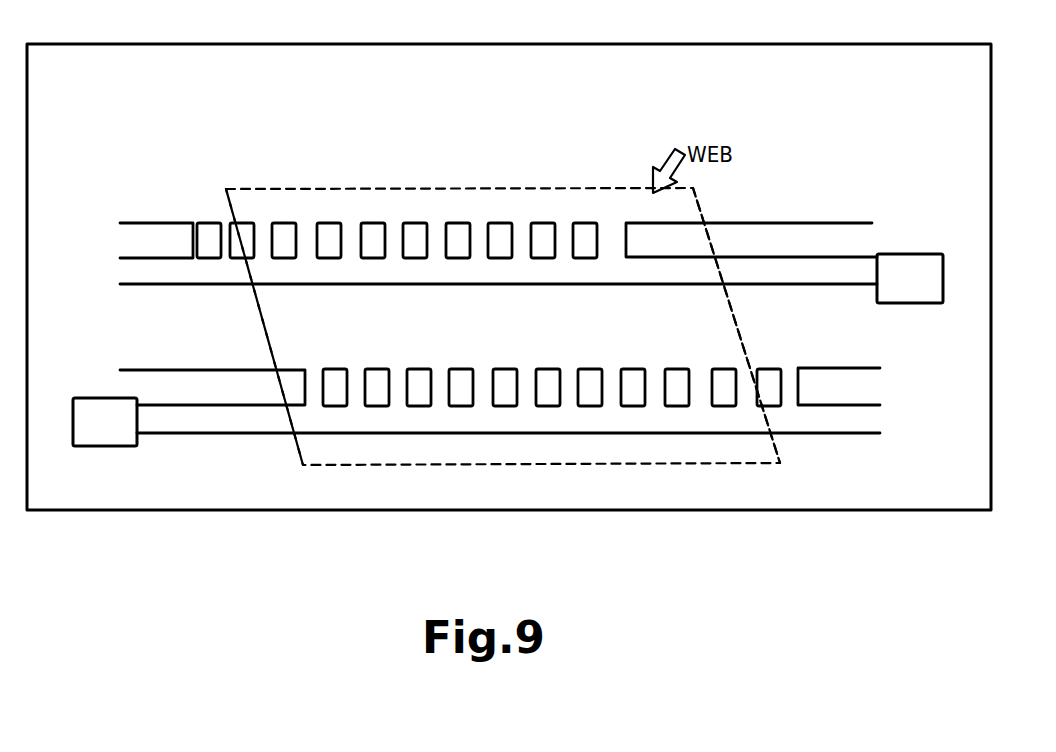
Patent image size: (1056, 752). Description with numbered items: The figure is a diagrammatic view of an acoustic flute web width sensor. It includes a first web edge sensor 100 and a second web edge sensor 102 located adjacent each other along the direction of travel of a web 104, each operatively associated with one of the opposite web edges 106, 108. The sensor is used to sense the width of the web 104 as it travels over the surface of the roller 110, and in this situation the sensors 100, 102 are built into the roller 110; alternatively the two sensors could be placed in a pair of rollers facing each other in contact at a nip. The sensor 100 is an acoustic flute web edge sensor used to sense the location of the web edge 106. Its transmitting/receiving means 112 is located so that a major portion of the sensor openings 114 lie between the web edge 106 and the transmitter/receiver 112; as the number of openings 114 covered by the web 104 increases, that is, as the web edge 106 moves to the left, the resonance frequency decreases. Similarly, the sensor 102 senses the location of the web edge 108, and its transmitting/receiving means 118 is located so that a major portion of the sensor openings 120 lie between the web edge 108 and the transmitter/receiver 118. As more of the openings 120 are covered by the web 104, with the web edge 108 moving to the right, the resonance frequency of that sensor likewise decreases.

The first web edge sensor 100 is at (195, 216).
The second web edge sensor 102 is at (132, 367).
The web 104 is at (553, 185).
The web edge 106 is at (272, 332).
The web edge 108 is at (734, 326).
The roller 110 is at (991, 194).
The transmitting/receiving means 112 is at (893, 254).
The sensor openings 114 is at (307, 232).
The transmitting/receiving means 118 is at (104, 446).
The sensor openings 120 is at (355, 400).